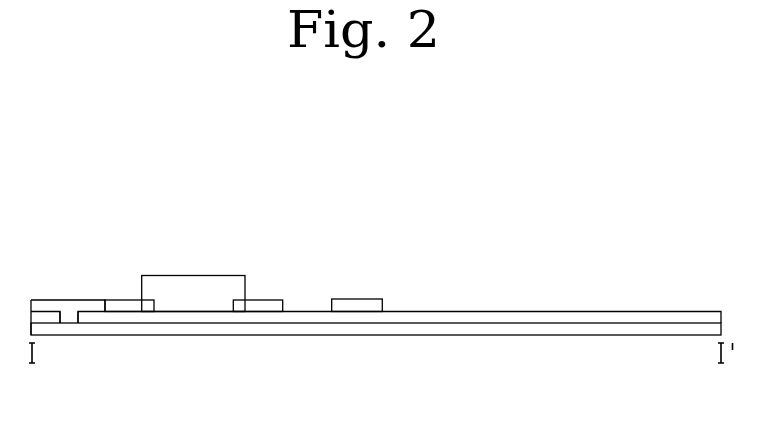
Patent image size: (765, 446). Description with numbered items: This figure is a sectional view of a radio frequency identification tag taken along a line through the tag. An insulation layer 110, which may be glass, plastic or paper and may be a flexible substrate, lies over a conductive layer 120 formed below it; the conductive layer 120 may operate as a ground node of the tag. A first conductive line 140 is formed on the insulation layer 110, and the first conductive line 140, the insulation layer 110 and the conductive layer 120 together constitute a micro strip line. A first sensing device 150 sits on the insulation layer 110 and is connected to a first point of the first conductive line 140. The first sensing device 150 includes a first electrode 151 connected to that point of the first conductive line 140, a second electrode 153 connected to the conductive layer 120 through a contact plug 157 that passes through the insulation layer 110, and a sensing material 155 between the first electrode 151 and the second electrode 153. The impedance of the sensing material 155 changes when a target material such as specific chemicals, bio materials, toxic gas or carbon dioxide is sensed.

The insulation layer 110 is at (499, 318).
The conductive layer 120 is at (568, 330).
The first conductive line 140 is at (357, 305).
The first sensing device 150 is at (273, 203).
The first electrode 151 is at (257, 307).
The second electrode 153 is at (130, 305).
The sensing material 155 is at (192, 283).
The contact plug 157 is at (70, 305).